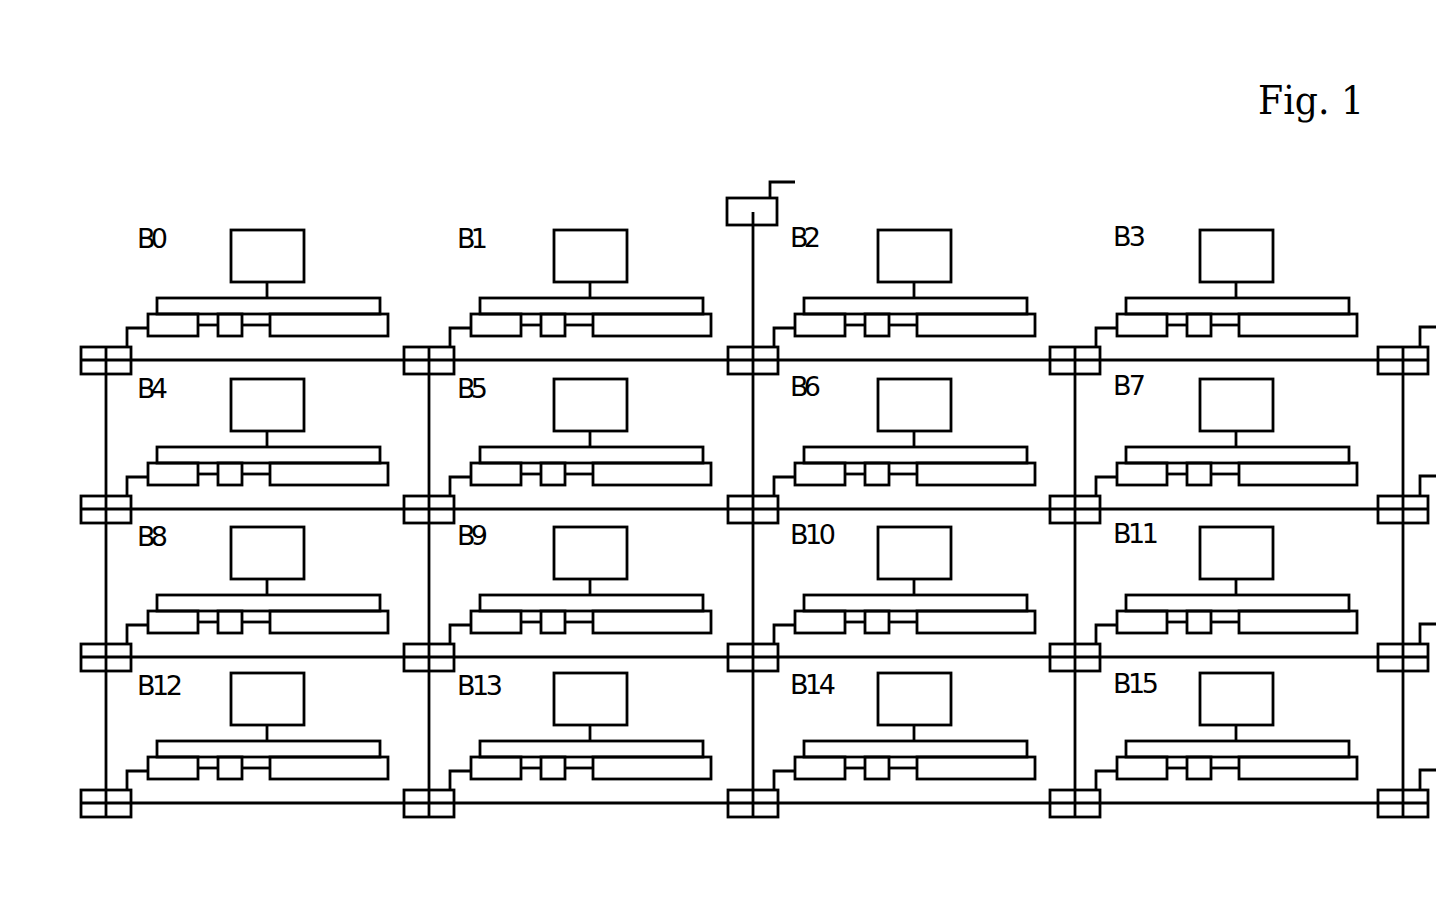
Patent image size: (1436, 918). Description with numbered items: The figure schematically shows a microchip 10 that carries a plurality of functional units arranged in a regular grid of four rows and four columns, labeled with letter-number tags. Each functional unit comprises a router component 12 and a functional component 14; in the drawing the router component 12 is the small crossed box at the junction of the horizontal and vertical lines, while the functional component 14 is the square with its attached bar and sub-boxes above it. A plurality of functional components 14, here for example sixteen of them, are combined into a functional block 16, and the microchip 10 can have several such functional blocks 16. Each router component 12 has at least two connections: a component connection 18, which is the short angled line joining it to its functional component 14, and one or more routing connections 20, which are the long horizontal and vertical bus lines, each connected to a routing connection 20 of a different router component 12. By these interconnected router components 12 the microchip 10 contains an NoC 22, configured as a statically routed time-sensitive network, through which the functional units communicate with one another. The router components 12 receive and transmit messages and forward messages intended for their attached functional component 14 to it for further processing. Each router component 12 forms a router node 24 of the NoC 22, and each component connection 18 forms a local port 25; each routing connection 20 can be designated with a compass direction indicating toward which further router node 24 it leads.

The microchip 10 is at (226, 132).
The router component 12 is at (96, 350).
The functional component 14 is at (571, 208).
The functional block 16 is at (421, 132).
The component connection 18 is at (451, 327).
The routing connection 20 is at (428, 410).
The NoC 22 is at (694, 142).
The router node 24 is at (762, 353).
The local port 25 is at (783, 325).